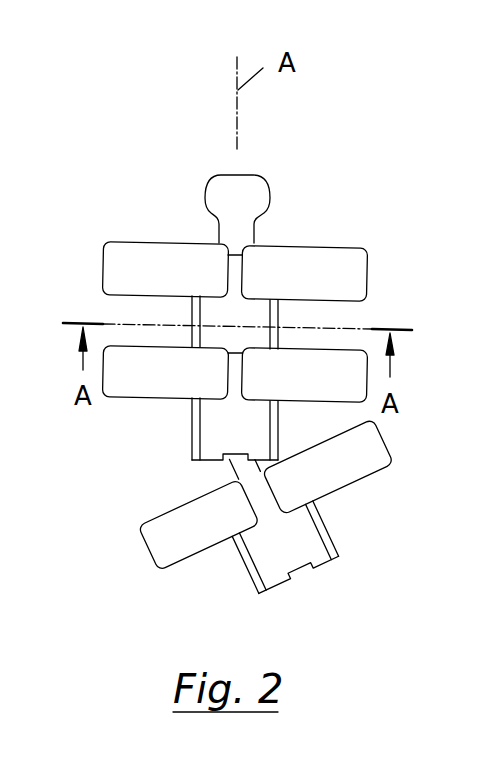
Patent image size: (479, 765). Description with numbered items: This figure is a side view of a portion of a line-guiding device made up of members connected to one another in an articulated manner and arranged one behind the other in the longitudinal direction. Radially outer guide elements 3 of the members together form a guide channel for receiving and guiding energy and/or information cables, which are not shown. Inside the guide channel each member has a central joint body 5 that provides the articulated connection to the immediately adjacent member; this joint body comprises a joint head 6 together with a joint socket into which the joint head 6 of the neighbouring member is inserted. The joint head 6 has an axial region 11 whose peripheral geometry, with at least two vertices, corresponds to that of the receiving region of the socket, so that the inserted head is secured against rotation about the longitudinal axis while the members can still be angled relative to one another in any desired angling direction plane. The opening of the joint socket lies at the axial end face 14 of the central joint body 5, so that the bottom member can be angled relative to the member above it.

The guide elements 3 is at (162, 258).
The central joint body 5 is at (253, 318).
The joint head 6 is at (228, 185).
The axial region 11 is at (293, 175).
The axial end face 14 is at (283, 583).